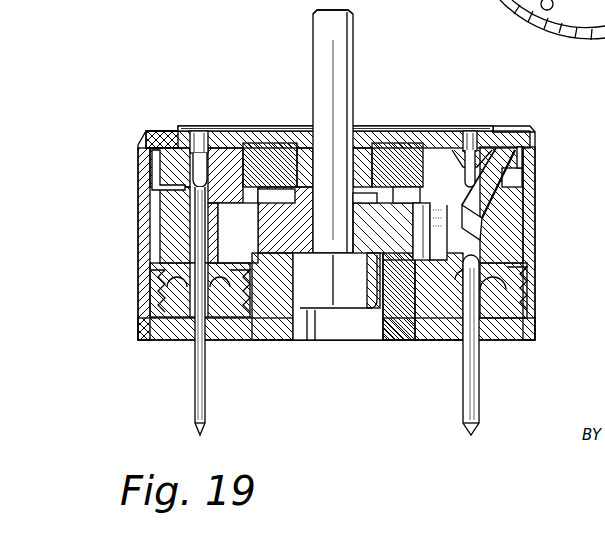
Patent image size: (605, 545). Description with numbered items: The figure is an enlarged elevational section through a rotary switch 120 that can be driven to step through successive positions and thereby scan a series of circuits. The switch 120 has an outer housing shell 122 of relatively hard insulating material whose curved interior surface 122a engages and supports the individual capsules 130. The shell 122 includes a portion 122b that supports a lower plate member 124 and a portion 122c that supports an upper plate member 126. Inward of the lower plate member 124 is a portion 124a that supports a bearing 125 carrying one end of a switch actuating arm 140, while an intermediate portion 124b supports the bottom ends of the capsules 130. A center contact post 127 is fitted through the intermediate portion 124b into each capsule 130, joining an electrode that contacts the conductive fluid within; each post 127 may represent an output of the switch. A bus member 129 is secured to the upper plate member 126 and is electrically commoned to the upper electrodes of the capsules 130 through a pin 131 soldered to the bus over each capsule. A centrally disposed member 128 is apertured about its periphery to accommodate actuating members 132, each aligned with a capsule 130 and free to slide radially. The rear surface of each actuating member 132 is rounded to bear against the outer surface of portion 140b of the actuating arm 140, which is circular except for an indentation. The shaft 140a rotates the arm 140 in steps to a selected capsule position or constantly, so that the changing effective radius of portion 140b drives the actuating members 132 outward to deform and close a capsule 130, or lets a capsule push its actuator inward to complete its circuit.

The rotary switch 120 is at (137, 258).
The outer housing shell 122 is at (517, 248).
The interior surface 122a is at (487, 205).
The shell portion 122b is at (530, 140).
The shell portion 122c is at (510, 330).
The lower plate member 124 is at (515, 330).
The inward portion of lower plate member 124a is at (400, 290).
The intermediate portion of lower plate member 124b is at (458, 325).
The bearing 125 is at (378, 310).
The upper plate member 126 is at (515, 133).
The center contact post 127 is at (467, 415).
The centrally disposed member 128 is at (395, 150).
The bus member 129 is at (243, 129).
The capsule 130 is at (508, 153).
The pin 131 is at (470, 132).
The actuating member 132 is at (270, 320).
The switch actuating arm 140 is at (357, 63).
The shaft 140a is at (331, 37).
The circular portion of actuator 140b is at (398, 236).